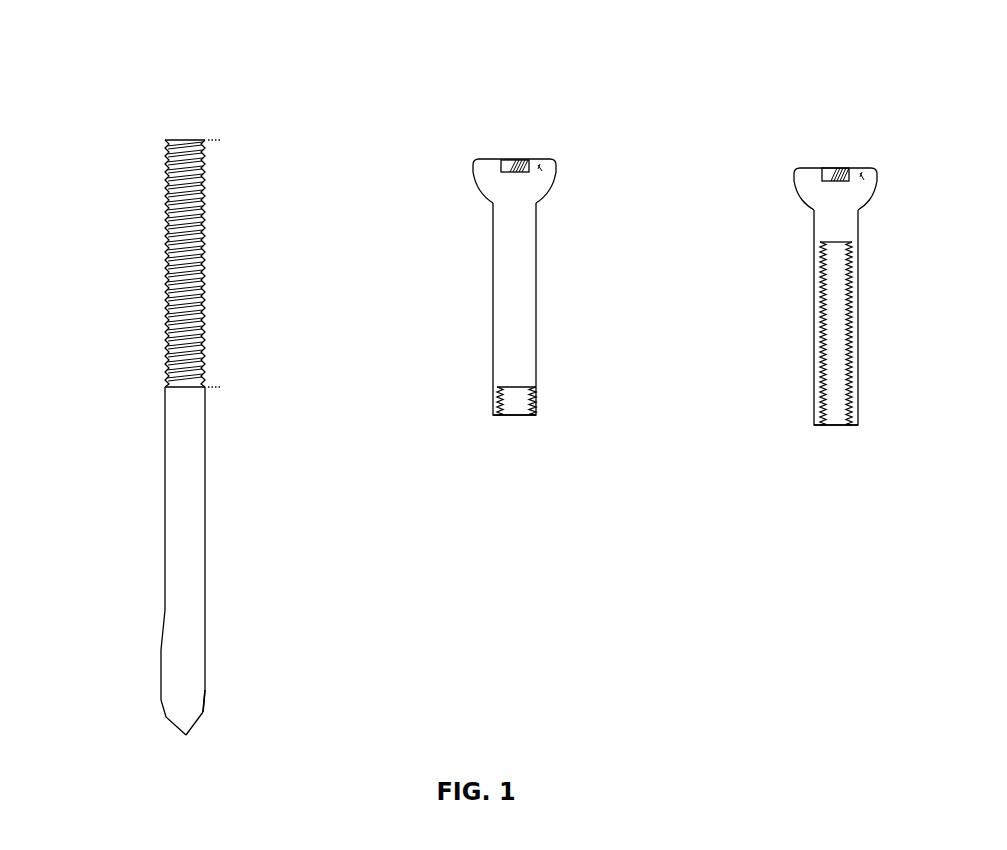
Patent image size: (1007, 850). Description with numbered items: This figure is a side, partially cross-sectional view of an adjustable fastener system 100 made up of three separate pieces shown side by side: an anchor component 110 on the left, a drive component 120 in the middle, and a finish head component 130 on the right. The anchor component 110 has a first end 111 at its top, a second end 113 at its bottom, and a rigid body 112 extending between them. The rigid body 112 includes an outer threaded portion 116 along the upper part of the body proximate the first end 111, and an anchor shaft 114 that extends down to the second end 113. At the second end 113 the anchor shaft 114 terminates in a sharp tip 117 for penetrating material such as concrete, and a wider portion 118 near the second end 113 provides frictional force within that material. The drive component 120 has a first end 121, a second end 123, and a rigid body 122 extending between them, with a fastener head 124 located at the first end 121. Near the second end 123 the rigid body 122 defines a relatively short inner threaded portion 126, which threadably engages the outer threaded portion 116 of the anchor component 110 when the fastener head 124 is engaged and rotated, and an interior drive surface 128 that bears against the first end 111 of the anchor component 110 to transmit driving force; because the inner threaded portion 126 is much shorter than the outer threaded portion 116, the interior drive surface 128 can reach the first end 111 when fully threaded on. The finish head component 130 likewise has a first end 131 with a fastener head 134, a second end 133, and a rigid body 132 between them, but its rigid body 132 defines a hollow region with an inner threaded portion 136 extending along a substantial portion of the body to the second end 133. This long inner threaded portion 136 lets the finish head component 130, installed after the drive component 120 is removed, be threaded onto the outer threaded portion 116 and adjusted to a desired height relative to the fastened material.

The adjustable fastener system 100 is at (130, 78).
The anchor component 110 is at (100, 237).
The first end 111 is at (187, 140).
The rigid body 112 is at (165, 388).
The second end 113 is at (173, 727).
The anchor shaft 114 is at (205, 536).
The outer threaded portion 116 is at (198, 346).
The sharp tip 117 is at (187, 735).
The wider portion 118 is at (205, 672).
The drive component 120 is at (425, 243).
The first end 121 is at (535, 159).
The rigid body 122 is at (536, 312).
The second end 123 is at (493, 415).
The fastener head 124 is at (550, 170).
The inner threaded portion 126 is at (522, 403).
The interior drive surface 128 is at (513, 387).
The finish head component 130 is at (757, 245).
The first end 131 is at (858, 168).
The rigid body 132 is at (858, 320).
The second end 133 is at (814, 425).
The fastener head 134 is at (875, 177).
The inner threaded portion 136 is at (848, 405).